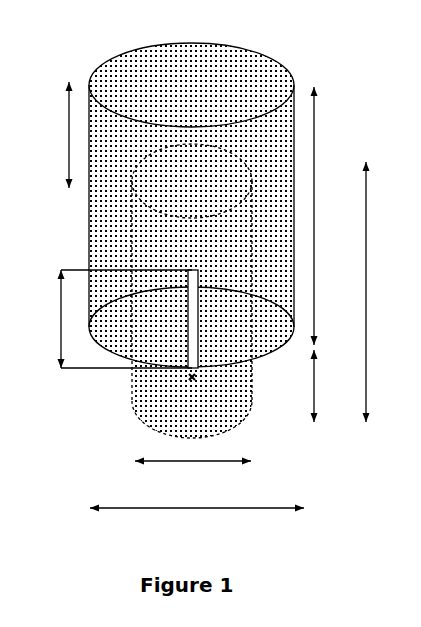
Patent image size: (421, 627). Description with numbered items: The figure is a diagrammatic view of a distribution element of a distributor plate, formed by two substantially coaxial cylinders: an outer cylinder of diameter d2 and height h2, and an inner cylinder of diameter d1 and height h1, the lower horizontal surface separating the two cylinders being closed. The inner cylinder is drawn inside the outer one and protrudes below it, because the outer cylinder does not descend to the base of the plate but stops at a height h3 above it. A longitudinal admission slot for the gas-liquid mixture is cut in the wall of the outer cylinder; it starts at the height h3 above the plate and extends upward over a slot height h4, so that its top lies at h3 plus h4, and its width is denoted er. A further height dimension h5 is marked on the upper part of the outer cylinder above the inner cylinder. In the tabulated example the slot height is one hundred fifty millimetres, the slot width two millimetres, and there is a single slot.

The height of inner cylinder h1 is at (388, 292).
The height of outer cylinder h2 is at (330, 216).
The height of the outer cylinder with respect to the base plane of the plate h3 is at (334, 386).
The height of the admission slot for the gas-liquid mixture h4 is at (105, 319).
The height dimension of the distribution element h5 is at (52, 135).
The diameter of inner cylinder d1 is at (193, 477).
The diameter of outer cylinder d2 is at (197, 526).
The width of the admission slot for the gas-liquid mixture er is at (196, 394).